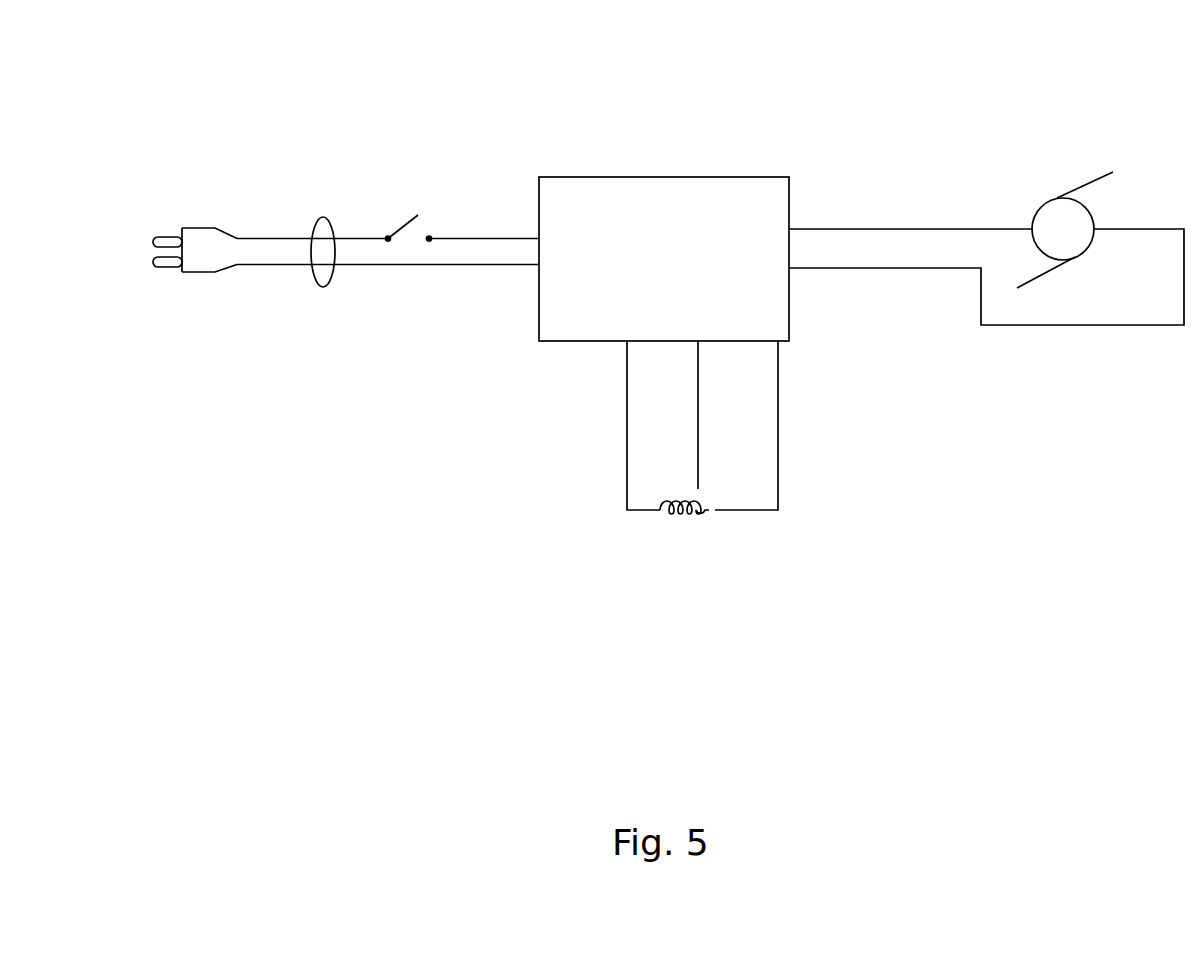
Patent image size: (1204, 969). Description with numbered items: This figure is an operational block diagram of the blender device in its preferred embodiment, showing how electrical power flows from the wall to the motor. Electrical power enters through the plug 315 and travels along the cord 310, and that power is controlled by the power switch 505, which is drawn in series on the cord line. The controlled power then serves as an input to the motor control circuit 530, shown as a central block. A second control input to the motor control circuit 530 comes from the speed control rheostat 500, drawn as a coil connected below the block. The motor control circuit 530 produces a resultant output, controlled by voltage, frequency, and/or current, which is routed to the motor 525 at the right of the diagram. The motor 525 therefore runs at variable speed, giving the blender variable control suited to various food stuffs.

The plug 315 is at (213, 273).
The cord 310 is at (322, 216).
The power switch 505 is at (401, 226).
The motor control circuit 530 is at (662, 257).
The motor 525 is at (1046, 200).
The speed control rheostat 500 is at (680, 517).